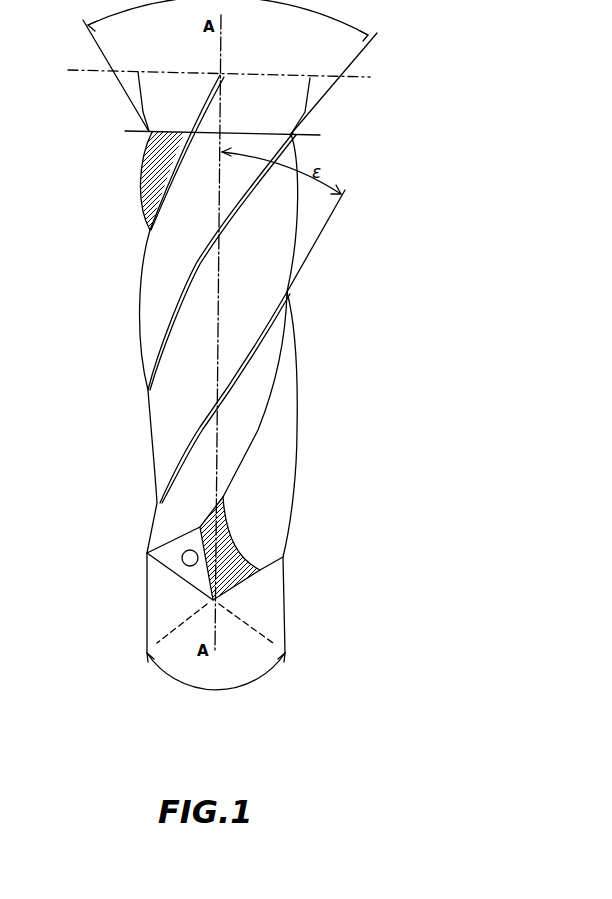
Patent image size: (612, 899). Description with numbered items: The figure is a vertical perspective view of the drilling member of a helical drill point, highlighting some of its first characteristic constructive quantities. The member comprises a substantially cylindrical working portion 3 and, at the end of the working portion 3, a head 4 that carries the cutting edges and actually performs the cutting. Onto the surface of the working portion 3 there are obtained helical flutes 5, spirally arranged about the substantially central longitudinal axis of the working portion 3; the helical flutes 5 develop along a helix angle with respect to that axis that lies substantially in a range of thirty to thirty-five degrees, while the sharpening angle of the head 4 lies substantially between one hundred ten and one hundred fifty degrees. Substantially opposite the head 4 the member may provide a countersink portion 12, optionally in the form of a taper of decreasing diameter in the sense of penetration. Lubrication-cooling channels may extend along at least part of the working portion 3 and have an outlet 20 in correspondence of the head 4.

The working portion 3 is at (276, 384).
The head 4 is at (128, 577).
The helical flutes 5 is at (155, 303).
The countersink portion 12 is at (310, 128).
The outlet 20 is at (188, 566).